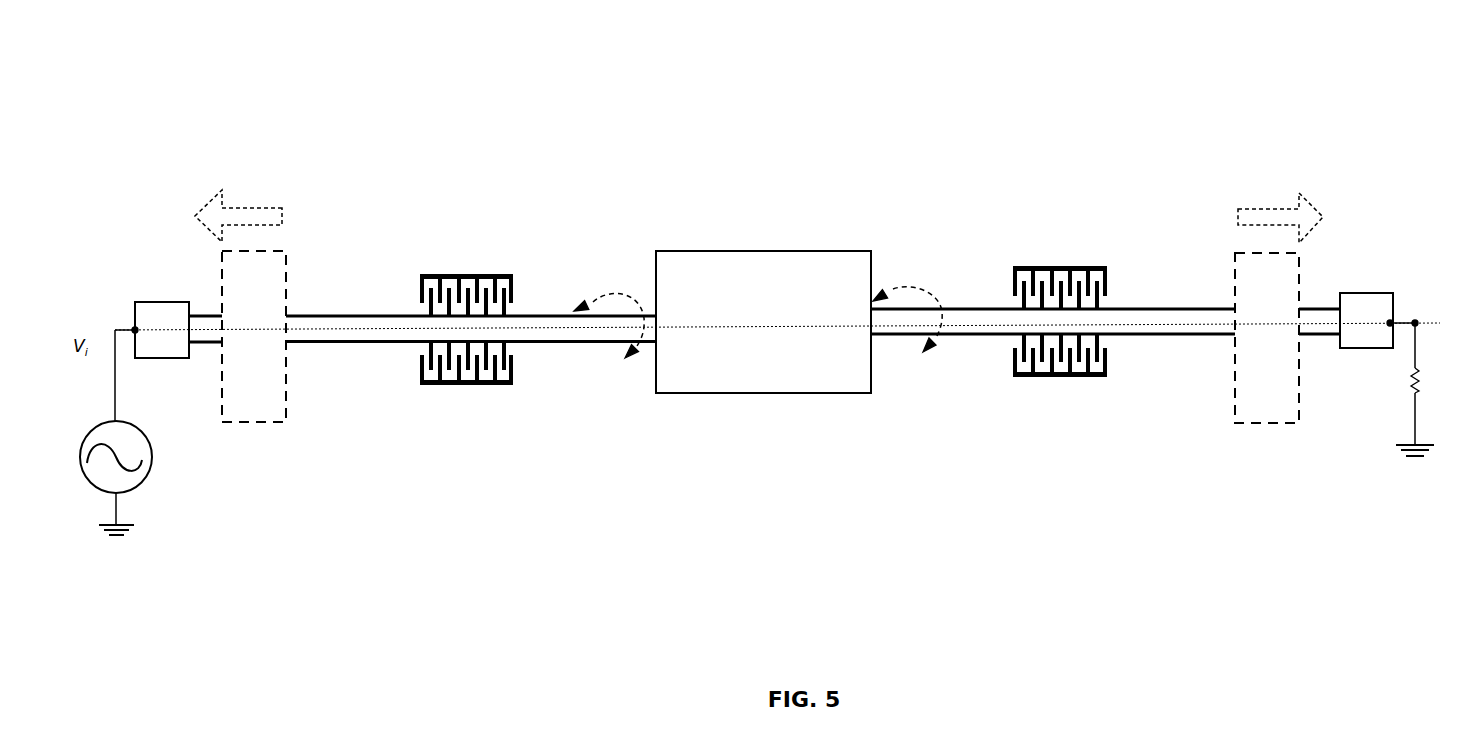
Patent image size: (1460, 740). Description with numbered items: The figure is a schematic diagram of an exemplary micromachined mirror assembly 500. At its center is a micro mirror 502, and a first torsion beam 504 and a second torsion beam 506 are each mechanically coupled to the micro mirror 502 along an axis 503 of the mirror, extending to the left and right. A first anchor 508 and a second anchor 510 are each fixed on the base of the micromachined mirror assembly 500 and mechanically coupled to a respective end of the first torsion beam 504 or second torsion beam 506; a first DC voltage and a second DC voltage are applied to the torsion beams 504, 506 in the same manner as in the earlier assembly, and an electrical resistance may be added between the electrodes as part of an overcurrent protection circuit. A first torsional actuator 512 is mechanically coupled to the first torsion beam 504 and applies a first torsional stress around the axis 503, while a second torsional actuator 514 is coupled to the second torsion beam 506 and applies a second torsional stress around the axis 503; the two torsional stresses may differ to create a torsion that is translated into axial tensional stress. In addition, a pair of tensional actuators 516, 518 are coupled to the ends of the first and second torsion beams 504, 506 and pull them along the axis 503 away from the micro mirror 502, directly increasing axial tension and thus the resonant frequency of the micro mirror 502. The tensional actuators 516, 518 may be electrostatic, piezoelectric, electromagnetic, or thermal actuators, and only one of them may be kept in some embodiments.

The micromachined mirror assembly 500 is at (730, 38).
The micro mirror 502 is at (763, 322).
The axis 503 is at (1426, 318).
The first torsion beam 504 is at (557, 315).
The second torsion beam 506 is at (983, 308).
The first anchor 508 is at (172, 300).
The second anchor 510 is at (1375, 292).
The first torsional actuator 512 is at (463, 249).
The second torsional actuator 514 is at (1047, 240).
The tensional actuator 516 is at (240, 306).
The tensional actuator 518 is at (1279, 308).